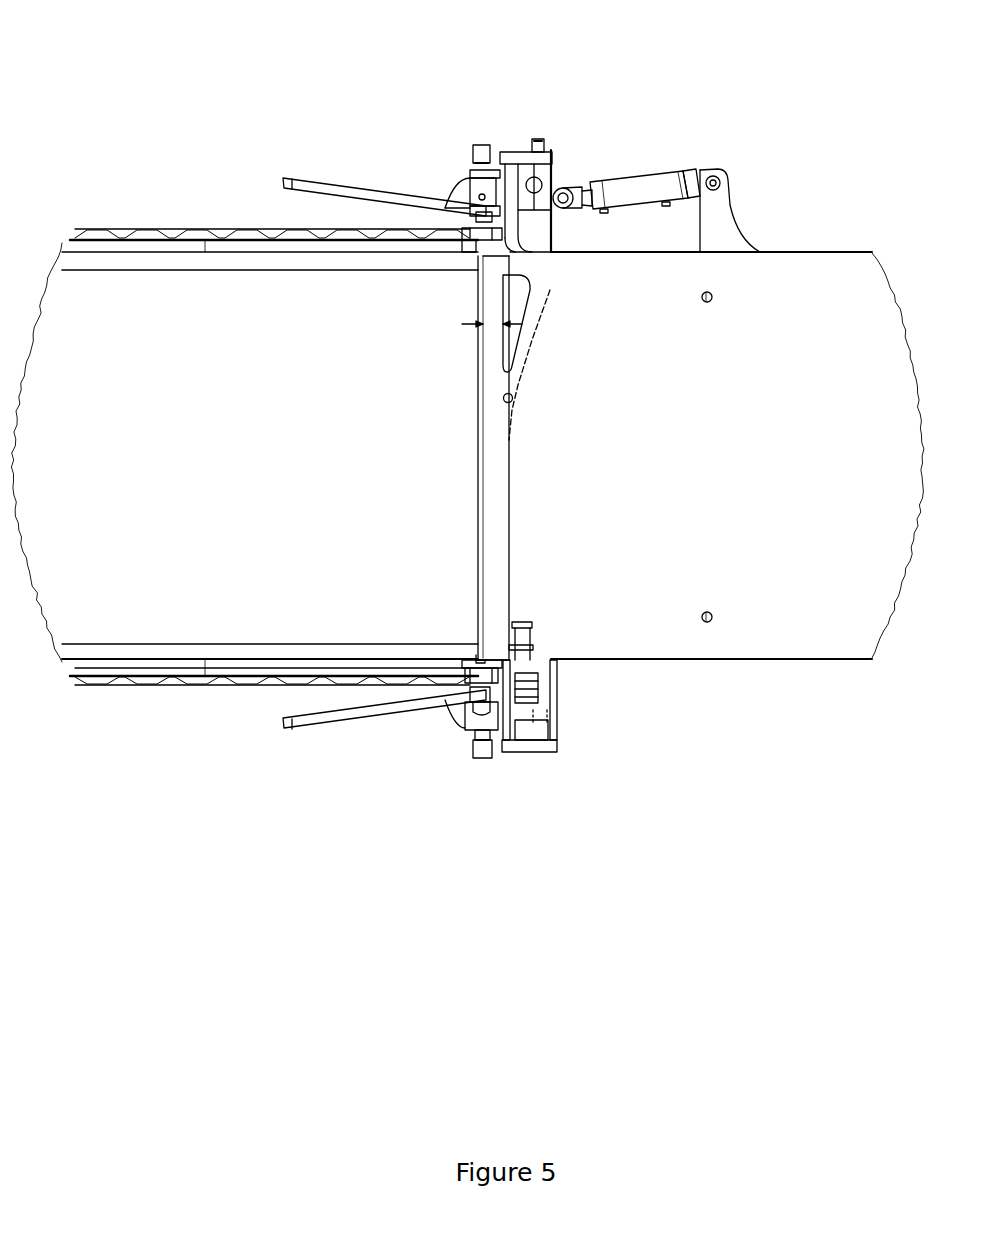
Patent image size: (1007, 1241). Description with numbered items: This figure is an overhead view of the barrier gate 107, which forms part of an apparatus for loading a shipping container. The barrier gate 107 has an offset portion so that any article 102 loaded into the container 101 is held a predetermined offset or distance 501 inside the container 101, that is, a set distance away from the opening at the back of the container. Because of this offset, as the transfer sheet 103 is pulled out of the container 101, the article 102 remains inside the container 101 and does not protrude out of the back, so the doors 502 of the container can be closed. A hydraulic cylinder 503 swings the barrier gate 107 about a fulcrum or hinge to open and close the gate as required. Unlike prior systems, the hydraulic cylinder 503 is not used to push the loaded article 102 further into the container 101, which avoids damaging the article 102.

The container 101 is at (150, 225).
The article 102 is at (265, 290).
The transfer sheet 103 is at (778, 612).
The barrier gate 107 is at (548, 385).
The predetermined offset or distance 501 is at (492, 330).
The doors of the container 502 is at (366, 162).
The hydraulic cylinder 503 is at (668, 155).